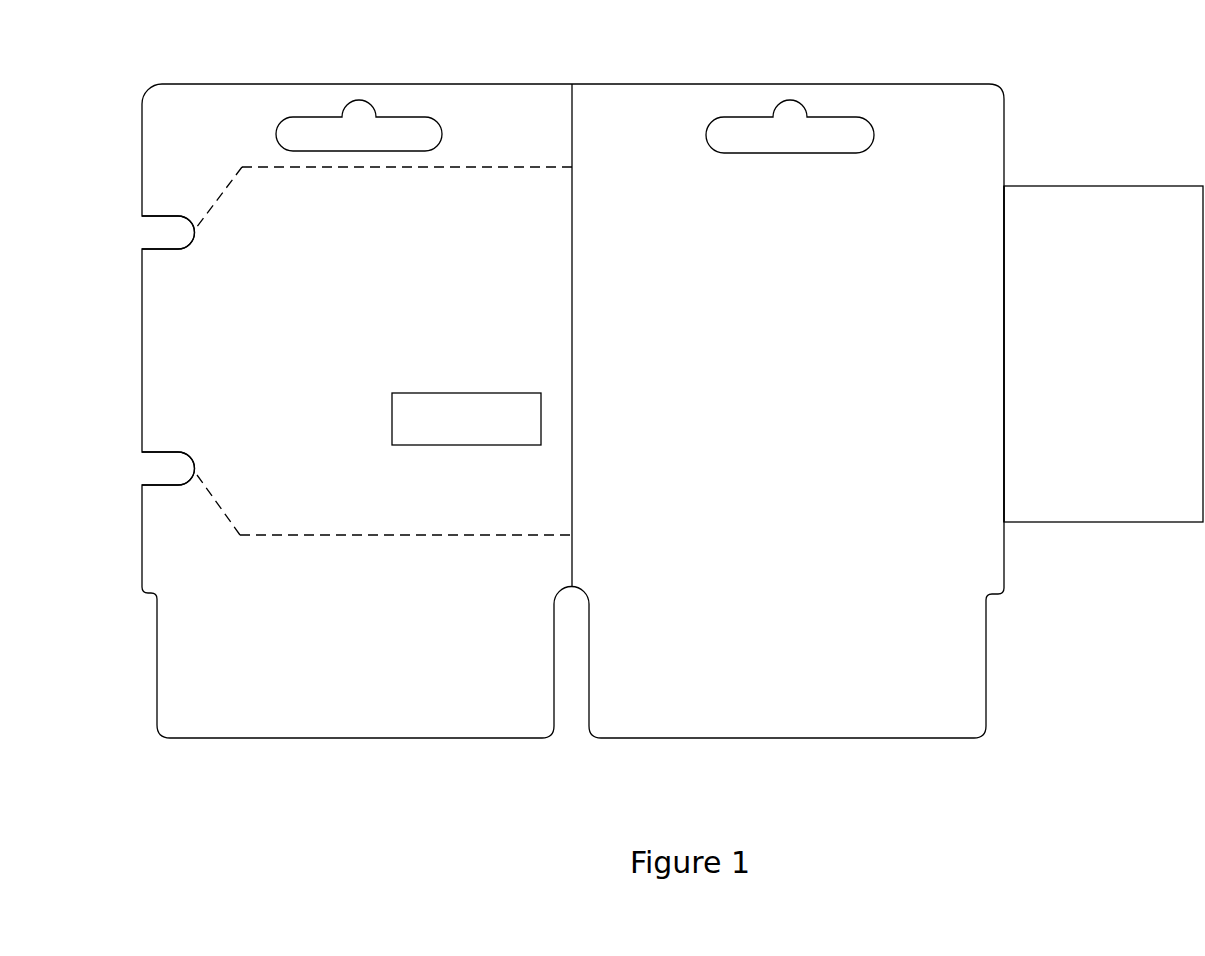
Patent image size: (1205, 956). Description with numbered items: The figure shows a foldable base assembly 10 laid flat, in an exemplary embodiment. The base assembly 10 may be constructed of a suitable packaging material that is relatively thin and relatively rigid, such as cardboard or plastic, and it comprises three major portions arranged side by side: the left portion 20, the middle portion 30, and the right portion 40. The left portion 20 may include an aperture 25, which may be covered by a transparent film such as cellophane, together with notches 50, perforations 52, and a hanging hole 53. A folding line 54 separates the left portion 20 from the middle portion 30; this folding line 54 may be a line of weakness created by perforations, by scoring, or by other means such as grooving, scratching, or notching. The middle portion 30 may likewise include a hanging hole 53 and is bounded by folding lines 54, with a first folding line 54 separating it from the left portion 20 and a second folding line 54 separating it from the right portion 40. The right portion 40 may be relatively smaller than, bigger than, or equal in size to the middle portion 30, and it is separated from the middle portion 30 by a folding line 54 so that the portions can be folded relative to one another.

The foldable base assembly 10 is at (672, 66).
The left portion 20 is at (365, 411).
The aperture 25 is at (466, 419).
The middle portion 30 is at (788, 411).
The right portion 40 is at (1103, 354).
The notches 50 is at (170, 350).
The perforations 52 is at (384, 351).
The hanging hole 53 is at (575, 126).
The folding line 54 is at (803, 335).